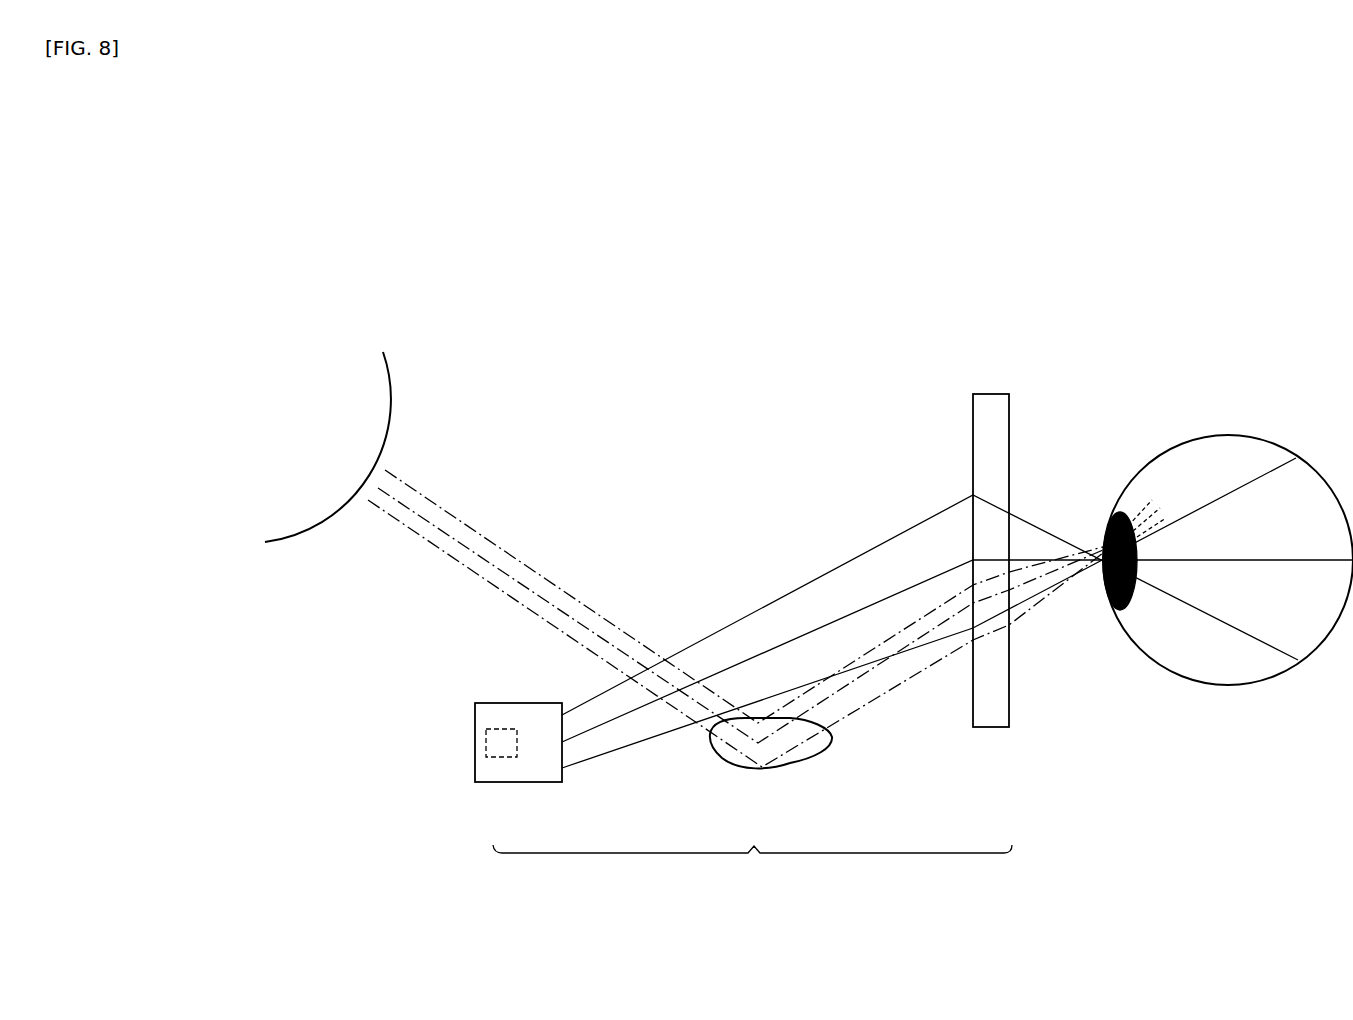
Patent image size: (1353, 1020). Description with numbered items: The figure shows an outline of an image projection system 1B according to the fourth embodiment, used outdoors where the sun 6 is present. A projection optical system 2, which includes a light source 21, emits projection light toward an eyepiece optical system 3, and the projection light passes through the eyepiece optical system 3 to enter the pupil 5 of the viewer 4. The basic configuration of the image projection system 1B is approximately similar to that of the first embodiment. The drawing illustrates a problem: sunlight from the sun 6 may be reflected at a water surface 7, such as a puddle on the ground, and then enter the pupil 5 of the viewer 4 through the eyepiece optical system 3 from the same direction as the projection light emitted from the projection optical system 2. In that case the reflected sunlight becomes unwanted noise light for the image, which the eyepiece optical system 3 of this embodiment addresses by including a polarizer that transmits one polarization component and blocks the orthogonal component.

The image projection system 1B is at (752, 870).
The projection optical system 2 is at (517, 784).
The light source 21 is at (476, 745).
The eyepiece optical system 3 is at (990, 730).
The viewer 4 is at (1226, 434).
The pupil 5 is at (1113, 511).
The sun 6 is at (399, 384).
The water surface 7 is at (797, 771).